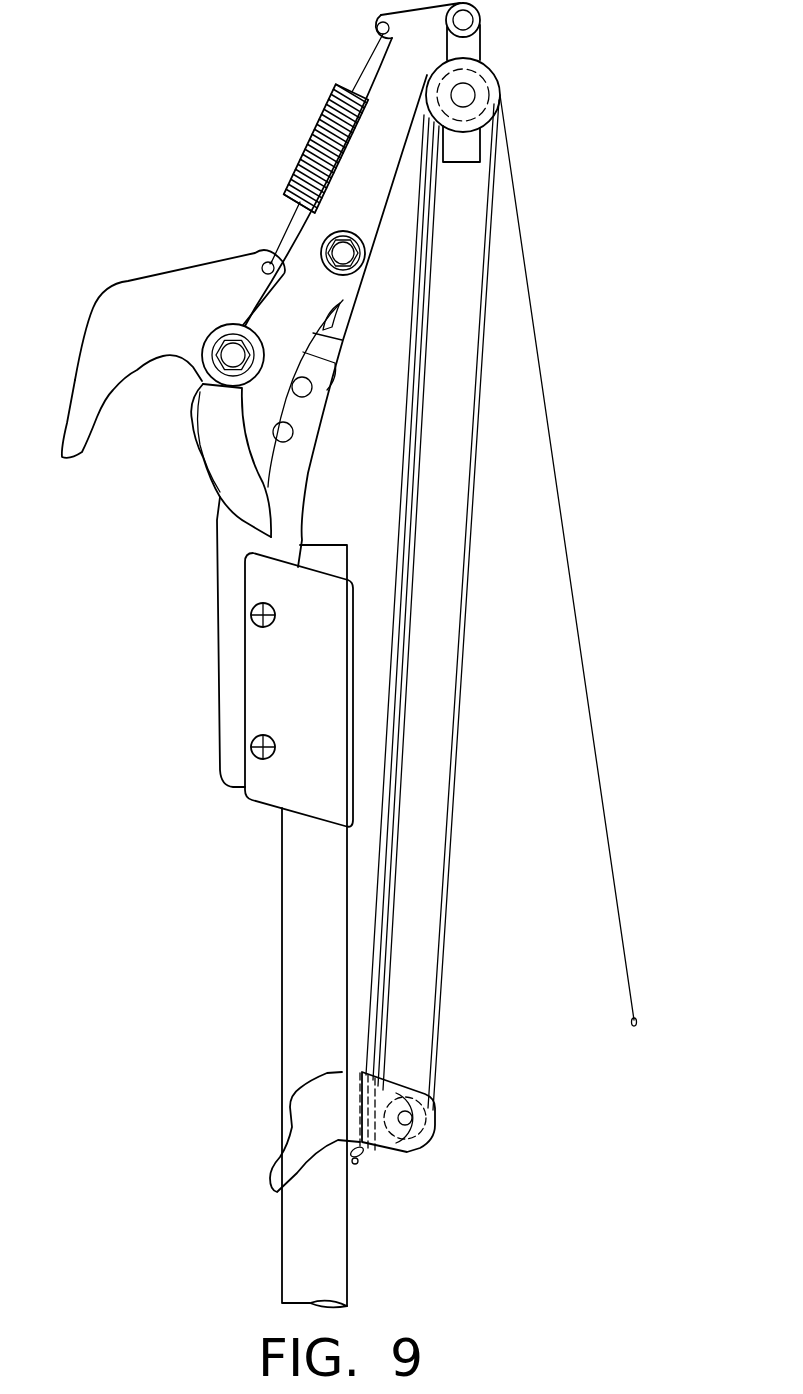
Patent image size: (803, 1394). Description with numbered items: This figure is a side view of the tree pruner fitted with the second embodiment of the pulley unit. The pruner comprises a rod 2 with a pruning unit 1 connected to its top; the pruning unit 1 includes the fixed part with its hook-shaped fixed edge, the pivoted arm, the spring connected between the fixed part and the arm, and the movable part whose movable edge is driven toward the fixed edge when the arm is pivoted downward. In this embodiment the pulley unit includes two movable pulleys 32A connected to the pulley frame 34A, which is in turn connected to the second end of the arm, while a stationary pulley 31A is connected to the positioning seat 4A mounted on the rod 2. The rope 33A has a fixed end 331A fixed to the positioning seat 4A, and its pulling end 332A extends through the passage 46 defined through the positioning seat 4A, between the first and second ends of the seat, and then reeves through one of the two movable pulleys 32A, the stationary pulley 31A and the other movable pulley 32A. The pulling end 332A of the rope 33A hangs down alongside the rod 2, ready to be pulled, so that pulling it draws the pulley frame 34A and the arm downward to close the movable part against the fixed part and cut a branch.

The pruning unit 1 is at (148, 254).
The rod 2 is at (293, 940).
The positioning seat 4A is at (255, 1130).
The passage 46 is at (375, 1070).
The stationary pulley 31A is at (437, 1125).
The movable pulleys 32A is at (493, 85).
The rope 33A is at (517, 247).
The pulley frame 34A is at (467, 48).
The fixed end 331A is at (362, 1160).
The pulling end 332A is at (634, 1026).